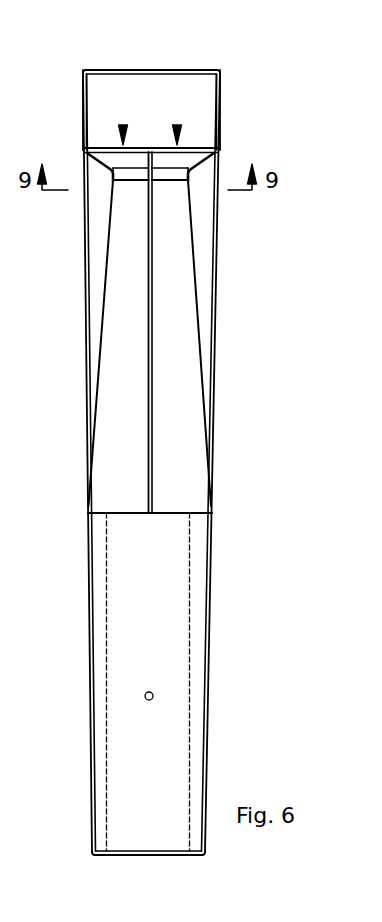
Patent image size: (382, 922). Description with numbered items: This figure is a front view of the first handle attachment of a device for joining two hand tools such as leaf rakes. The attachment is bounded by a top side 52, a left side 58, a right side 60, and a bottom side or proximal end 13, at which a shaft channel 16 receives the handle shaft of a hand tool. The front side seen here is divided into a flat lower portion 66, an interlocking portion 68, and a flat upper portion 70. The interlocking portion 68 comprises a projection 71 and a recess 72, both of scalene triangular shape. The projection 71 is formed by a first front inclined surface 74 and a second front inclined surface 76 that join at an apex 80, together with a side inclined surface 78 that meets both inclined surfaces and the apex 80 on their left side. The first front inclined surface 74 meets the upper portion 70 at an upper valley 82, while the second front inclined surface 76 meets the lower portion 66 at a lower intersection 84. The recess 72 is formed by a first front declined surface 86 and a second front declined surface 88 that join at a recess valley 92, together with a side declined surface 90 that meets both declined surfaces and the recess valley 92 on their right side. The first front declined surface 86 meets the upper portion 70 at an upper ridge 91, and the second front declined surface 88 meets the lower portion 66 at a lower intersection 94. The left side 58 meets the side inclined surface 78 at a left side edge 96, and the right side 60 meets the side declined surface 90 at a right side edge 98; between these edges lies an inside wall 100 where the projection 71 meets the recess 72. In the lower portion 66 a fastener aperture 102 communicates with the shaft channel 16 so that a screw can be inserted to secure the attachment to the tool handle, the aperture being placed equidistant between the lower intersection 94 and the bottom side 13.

The proximal end 13 is at (112, 855).
The shaft channel 16 is at (107, 645).
The top side 52 is at (203, 70).
The left side 58 is at (92, 673).
The right side 60 is at (210, 600).
The lower portion 66 is at (100, 578).
The interlocking portion 68 is at (50, 356).
The upper portion 70 is at (198, 102).
The projection 71 is at (122, 173).
The recess 72 is at (177, 127).
The first front inclined surface 74 is at (117, 163).
The second front inclined surface 76 is at (127, 278).
The side inclined surface 78 is at (102, 253).
The apex 80 is at (110, 157).
The upper valley 82 is at (125, 127).
The lower intersection 84 is at (118, 513).
The first front declined surface 86 is at (193, 157).
The second front declined surface 88 is at (168, 288).
The side declined surface 90 is at (203, 242).
The upper ridge 91 is at (163, 147).
The recess valley 92 is at (173, 173).
The lower intersection 94 is at (175, 515).
The left side edge 96 is at (83, 283).
The right side edge 98 is at (218, 293).
The inside wall 100 is at (150, 362).
The fastener aperture 102 is at (157, 695).